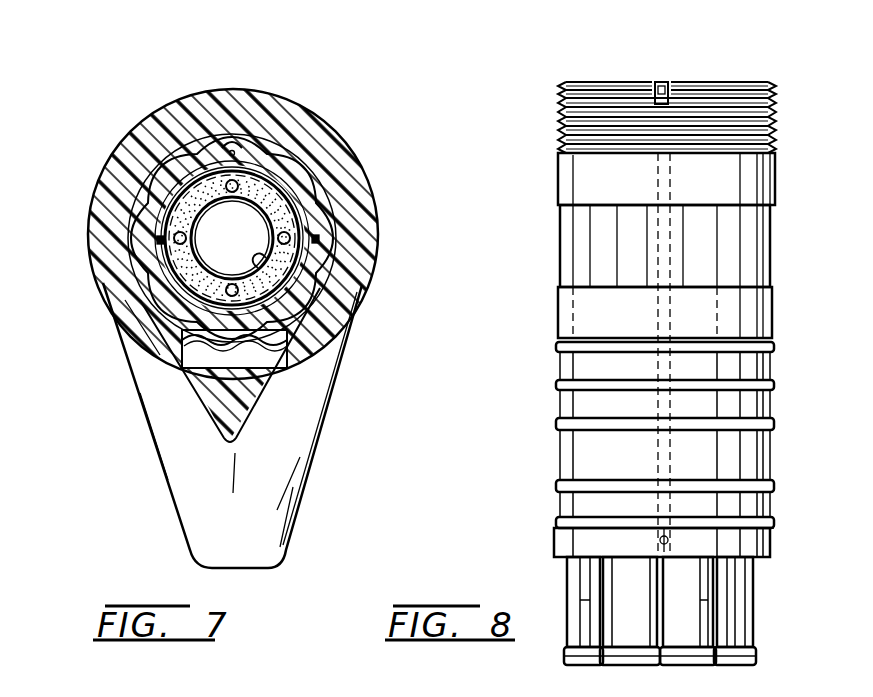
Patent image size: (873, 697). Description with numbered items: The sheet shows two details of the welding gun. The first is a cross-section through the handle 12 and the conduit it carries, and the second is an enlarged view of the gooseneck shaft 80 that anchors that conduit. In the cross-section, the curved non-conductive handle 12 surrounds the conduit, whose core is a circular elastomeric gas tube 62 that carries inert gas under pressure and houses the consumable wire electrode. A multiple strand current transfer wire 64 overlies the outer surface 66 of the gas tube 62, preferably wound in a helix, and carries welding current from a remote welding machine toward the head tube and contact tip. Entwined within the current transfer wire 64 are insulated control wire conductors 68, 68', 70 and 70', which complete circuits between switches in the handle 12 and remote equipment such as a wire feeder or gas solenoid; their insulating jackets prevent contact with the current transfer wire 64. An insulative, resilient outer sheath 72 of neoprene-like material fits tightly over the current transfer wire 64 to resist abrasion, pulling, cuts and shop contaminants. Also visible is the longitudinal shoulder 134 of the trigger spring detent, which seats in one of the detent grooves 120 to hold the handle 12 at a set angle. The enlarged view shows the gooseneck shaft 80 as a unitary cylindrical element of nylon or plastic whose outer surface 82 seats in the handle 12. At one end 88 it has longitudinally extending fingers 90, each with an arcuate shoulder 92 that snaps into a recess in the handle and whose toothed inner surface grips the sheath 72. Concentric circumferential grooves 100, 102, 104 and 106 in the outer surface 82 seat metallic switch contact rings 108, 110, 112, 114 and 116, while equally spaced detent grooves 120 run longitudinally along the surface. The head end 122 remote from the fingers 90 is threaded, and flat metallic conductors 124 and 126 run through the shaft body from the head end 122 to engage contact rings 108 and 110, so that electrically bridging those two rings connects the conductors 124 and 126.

In FIG. 7, the handle 12 is at (145, 140).
In FIG. 7, the current transfer wire 64 is at (133, 157).
In FIG. 7, the control wire conductor 68 is at (247, 208).
In FIG. 7, the control wire conductor 68' is at (172, 217).
In FIG. 7, the metallic conductor 124 is at (215, 137).
In FIG. 8, the metallic conductor 124 is at (660, 80).
In FIG. 7, the detent grooves 120 is at (150, 308).
In FIG. 8, the detent grooves 120 is at (760, 238).
In FIG. 7, the outer surface of gas tube 66 is at (330, 175).
In FIG. 7, the control wire conductor 70' is at (300, 238).
In FIG. 7, the control wire conductor 70 is at (298, 285).
In FIG. 7, the gas tube 62 is at (357, 313).
In FIG. 7, the outer sheath 72 is at (345, 275).
In FIG. 7, the metallic conductor 126 is at (130, 375).
In FIG. 7, the longitudinal shoulder 134 is at (310, 387).
In FIG. 8, the head end 122 is at (775, 107).
In FIG. 8, the gooseneck shaft 80 is at (594, 188).
In FIG. 8, the outer surface of gooseneck shaft 82 is at (770, 313).
In FIG. 8, the circumferential groove 106 is at (770, 345).
In FIG. 8, the circumferential groove 104 is at (770, 383).
In FIG. 8, the circumferential groove 102 is at (770, 425).
In FIG. 8, the circumferential groove 100 is at (770, 485).
In FIG. 8, the fingers 90 is at (770, 522).
In FIG. 8, the switch contact ring 116 is at (557, 348).
In FIG. 8, the switch contact ring 114 is at (557, 385).
In FIG. 8, the switch contact ring 112 is at (557, 427).
In FIG. 8, the switch contact ring 110 is at (557, 486).
In FIG. 8, the switch contact ring 108 is at (557, 525).
In FIG. 8, the arcuate shoulder 92 is at (755, 652).
In FIG. 8, the end of shaft 88 is at (740, 676).